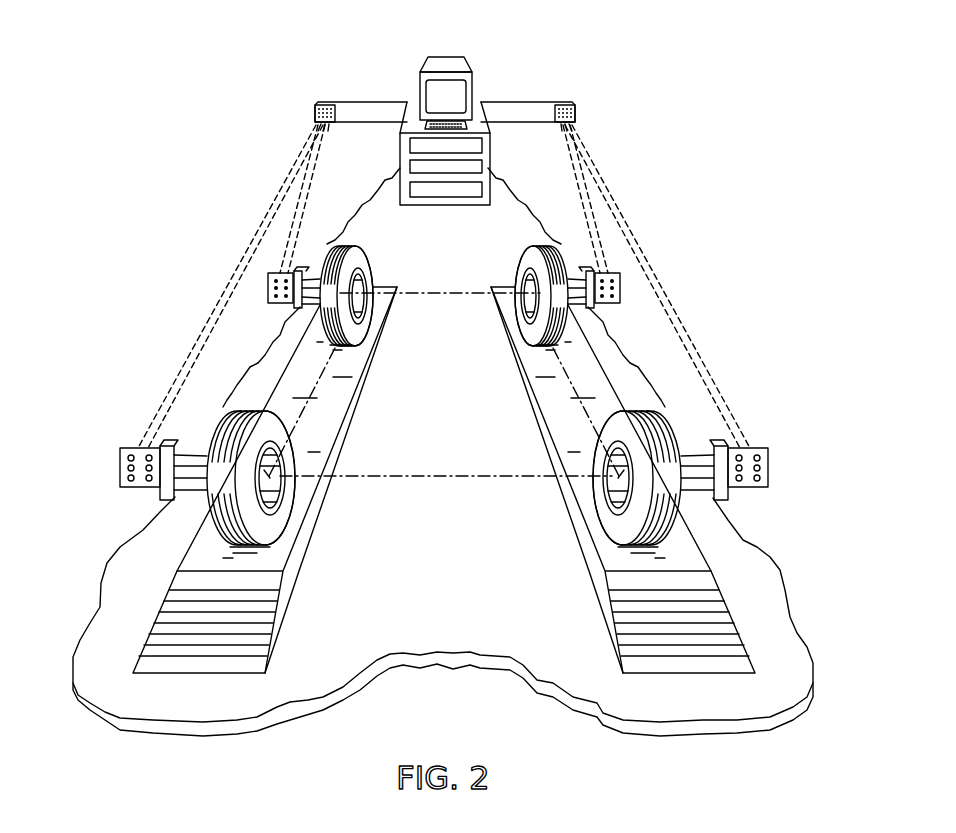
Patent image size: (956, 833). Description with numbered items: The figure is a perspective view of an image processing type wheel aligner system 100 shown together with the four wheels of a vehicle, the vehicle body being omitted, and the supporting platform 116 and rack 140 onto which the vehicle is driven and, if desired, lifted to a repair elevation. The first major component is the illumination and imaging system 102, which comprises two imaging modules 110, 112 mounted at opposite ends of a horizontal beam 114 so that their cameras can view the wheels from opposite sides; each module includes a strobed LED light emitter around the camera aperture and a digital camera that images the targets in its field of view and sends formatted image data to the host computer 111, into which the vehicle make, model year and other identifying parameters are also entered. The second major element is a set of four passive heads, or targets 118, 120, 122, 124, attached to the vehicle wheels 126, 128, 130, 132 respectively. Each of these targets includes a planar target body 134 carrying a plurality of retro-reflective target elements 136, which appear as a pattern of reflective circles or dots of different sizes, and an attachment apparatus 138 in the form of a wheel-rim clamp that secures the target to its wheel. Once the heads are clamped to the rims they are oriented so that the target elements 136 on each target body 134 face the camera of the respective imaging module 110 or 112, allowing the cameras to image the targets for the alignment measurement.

The aligner system 100 is at (740, 250).
The illumination and imaging system 102 is at (445, 106).
The imaging module 110 is at (316, 106).
The host computer 111 is at (450, 65).
The imaging module 112 is at (575, 107).
The horizontal beam 114 is at (413, 100).
The support surface 116 is at (378, 214).
The passive head (target) 118 is at (268, 288).
The passive head (target) 120 is at (133, 448).
The passive head (target) 122 is at (622, 288).
The passive head (target) 124 is at (691, 331).
The vehicle wheel 126 is at (362, 332).
The vehicle wheel 128 is at (285, 510).
The vehicle wheel 130 is at (528, 331).
The vehicle wheel 132 is at (603, 510).
The target body 134 is at (752, 450).
The target elements 136 is at (762, 480).
The attachment apparatus 138 is at (706, 441).
The rack 140 is at (355, 410).